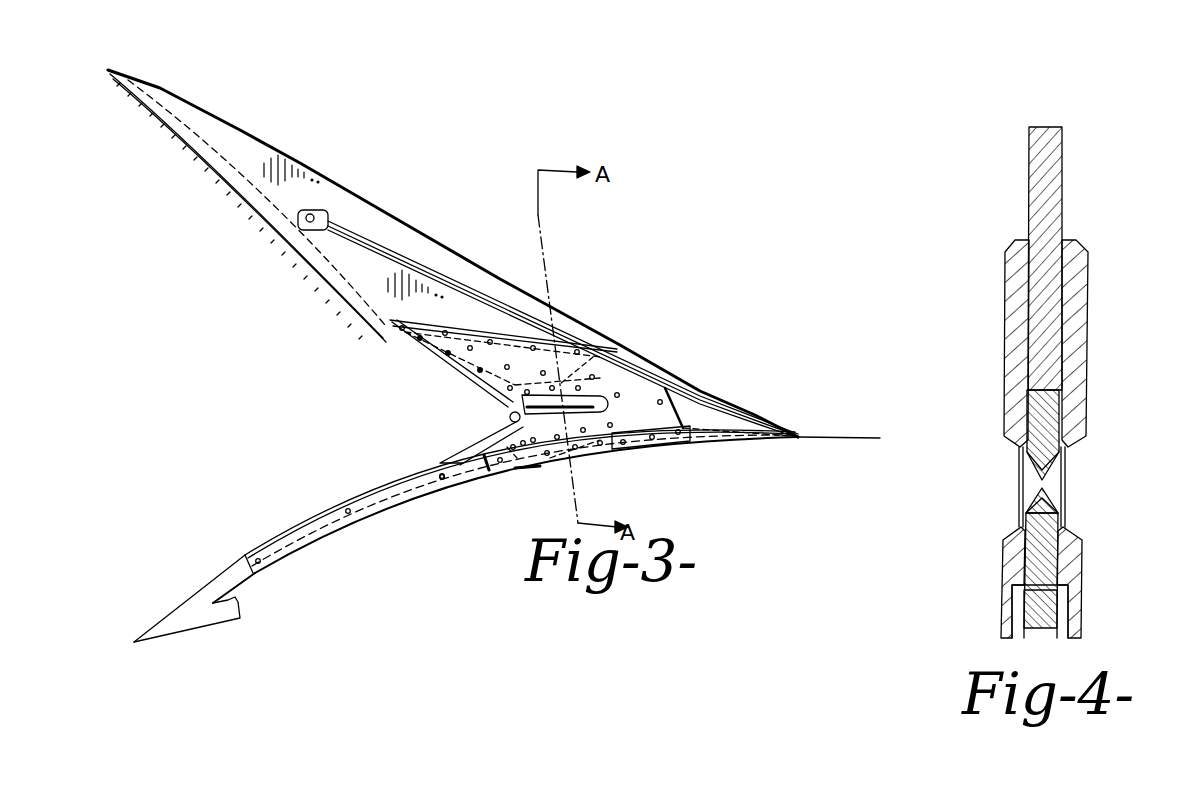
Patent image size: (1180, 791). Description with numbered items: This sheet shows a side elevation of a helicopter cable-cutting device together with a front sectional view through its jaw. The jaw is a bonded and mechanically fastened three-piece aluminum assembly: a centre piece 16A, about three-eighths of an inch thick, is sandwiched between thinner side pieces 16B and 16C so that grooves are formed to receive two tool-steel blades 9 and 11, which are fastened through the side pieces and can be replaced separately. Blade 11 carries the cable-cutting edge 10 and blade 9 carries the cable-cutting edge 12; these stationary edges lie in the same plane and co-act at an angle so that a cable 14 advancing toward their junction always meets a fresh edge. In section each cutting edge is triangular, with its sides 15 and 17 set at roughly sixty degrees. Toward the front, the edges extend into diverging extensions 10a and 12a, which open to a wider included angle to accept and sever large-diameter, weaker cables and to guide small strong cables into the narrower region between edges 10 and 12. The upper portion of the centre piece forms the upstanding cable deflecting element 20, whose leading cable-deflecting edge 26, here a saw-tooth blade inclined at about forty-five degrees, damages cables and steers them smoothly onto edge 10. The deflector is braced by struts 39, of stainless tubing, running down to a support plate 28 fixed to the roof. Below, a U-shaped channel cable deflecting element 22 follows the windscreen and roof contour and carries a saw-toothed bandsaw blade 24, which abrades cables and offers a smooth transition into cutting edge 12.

In FIG. 3, the cable deflecting element 20 is at (240, 157).
In FIG. 4, the cable deflecting element 20 is at (1030, 172).
In FIG. 3, the leading cable-deflecting edge 26 is at (294, 256).
In FIG. 3, the centre piece 16A is at (447, 250).
In FIG. 4, the centre piece 16A is at (1045, 333).
In FIG. 3, the side piece 16B is at (492, 325).
In FIG. 4, the side piece 16B is at (1090, 290).
In FIG. 4, the side piece 16C is at (1005, 297).
In FIG. 3, the cable-cutting edge 10 is at (527, 405).
In FIG. 4, the cable-cutting edge 10 is at (1052, 475).
In FIG. 3, the diverging extension 10a is at (505, 402).
In FIG. 3, the blade 11 is at (562, 380).
In FIG. 4, the blade 11 is at (1048, 405).
In FIG. 3, the cable 14 is at (510, 418).
In FIG. 3, the diverging extension 12a is at (490, 435).
In FIG. 3, the cable-cutting edge 12 is at (537, 425).
In FIG. 4, the cable-cutting edge 12 is at (1050, 493).
In FIG. 3, the blade 9 is at (575, 435).
In FIG. 4, the blade 9 is at (1050, 565).
In FIG. 3, the support plate 28 is at (667, 437).
In FIG. 3, the support struts 39 is at (697, 390).
In FIG. 3, the saw-toothed bandsaw blade 24 is at (372, 490).
In FIG. 3, the cable deflecting element 22 is at (325, 522).
In FIG. 4, the cable deflecting element 22 is at (1078, 610).
In FIG. 4, the side of triangular cutting edge 17 is at (1022, 503).
In FIG. 4, the side of triangular cutting edge 15 is at (1060, 505).